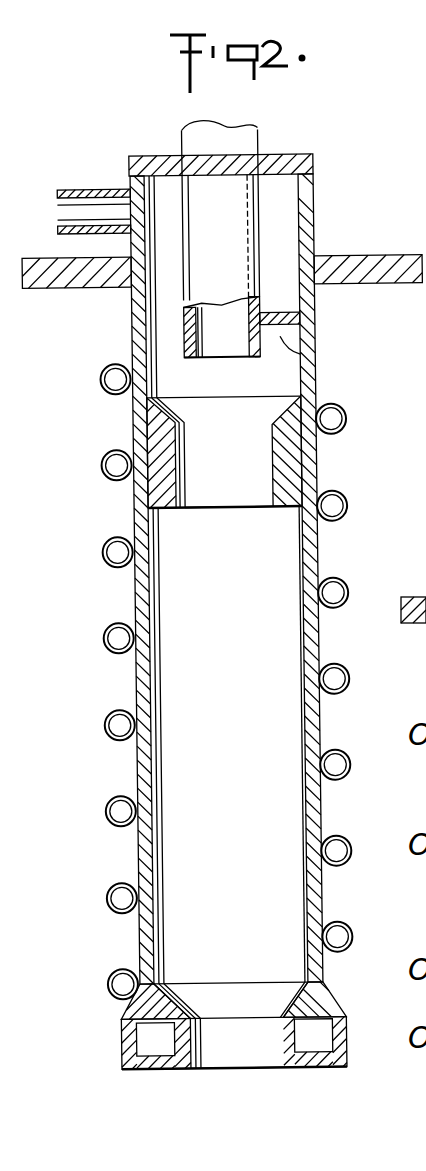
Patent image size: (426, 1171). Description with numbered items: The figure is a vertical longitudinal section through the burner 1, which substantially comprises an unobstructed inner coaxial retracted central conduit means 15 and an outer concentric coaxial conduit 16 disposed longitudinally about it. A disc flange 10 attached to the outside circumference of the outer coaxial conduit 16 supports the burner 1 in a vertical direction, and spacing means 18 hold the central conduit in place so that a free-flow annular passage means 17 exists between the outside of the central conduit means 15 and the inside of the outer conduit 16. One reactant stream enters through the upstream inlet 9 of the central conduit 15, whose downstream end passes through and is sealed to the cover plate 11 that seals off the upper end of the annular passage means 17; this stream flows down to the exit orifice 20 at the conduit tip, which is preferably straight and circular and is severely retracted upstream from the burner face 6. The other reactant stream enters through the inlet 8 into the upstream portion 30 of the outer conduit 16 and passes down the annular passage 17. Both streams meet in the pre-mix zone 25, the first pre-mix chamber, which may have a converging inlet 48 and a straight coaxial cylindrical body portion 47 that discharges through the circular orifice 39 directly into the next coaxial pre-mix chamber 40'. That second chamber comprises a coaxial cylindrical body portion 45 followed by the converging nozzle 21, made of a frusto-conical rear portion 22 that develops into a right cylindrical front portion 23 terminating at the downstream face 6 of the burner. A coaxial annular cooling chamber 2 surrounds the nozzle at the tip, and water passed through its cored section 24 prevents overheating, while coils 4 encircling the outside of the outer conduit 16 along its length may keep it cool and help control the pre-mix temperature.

The burner 1 is at (323, 229).
The cooling chamber 2 is at (361, 1047).
The coils 4 is at (338, 933).
The downstream face 6 is at (267, 1067).
The inlet 8 is at (112, 188).
The inlet 9 is at (264, 135).
The disc flange 10 is at (402, 257).
The cover plate 11 is at (160, 155).
The central conduit means 15 is at (230, 258).
The outer coaxial conduit 16 is at (320, 343).
The annular passage means 17 is at (321, 358).
The spacing means 18 is at (265, 312).
The exit orifice 20 is at (205, 362).
The converging nozzle 21 is at (230, 995).
The frusto-conical rear portion 22 is at (167, 993).
The right cylindrical front portion 23 is at (219, 1053).
The cored section 24 is at (311, 1050).
The pre-mix zone 25 is at (223, 497).
The upstream portion 30 is at (318, 197).
The circular orifice 39 is at (263, 508).
The pre-mix chamber 40' is at (207, 745).
The coaxial cylindrical body portion 45 is at (304, 622).
The straight coaxial cylindrical body portion 47 is at (271, 469).
The converging inlet 48 is at (214, 410).